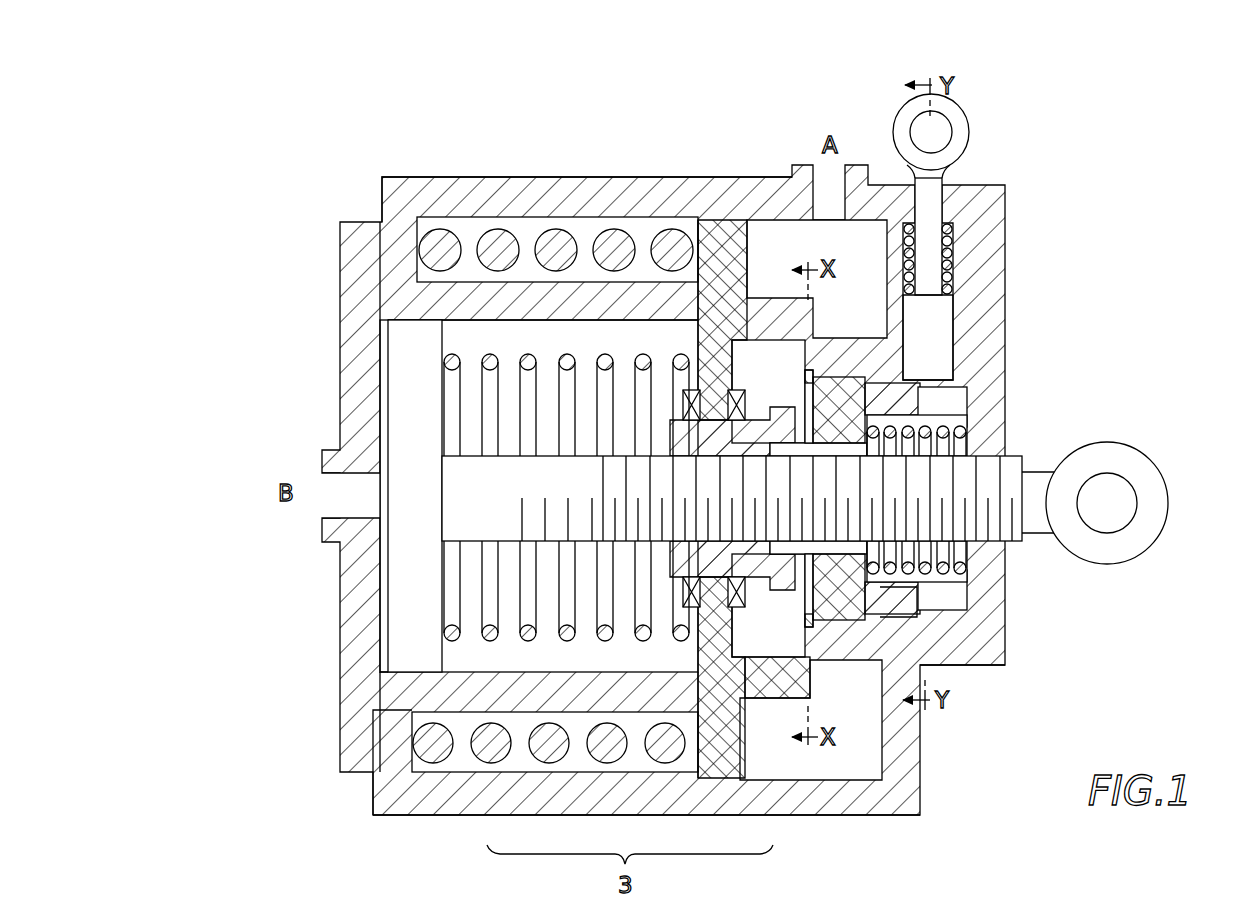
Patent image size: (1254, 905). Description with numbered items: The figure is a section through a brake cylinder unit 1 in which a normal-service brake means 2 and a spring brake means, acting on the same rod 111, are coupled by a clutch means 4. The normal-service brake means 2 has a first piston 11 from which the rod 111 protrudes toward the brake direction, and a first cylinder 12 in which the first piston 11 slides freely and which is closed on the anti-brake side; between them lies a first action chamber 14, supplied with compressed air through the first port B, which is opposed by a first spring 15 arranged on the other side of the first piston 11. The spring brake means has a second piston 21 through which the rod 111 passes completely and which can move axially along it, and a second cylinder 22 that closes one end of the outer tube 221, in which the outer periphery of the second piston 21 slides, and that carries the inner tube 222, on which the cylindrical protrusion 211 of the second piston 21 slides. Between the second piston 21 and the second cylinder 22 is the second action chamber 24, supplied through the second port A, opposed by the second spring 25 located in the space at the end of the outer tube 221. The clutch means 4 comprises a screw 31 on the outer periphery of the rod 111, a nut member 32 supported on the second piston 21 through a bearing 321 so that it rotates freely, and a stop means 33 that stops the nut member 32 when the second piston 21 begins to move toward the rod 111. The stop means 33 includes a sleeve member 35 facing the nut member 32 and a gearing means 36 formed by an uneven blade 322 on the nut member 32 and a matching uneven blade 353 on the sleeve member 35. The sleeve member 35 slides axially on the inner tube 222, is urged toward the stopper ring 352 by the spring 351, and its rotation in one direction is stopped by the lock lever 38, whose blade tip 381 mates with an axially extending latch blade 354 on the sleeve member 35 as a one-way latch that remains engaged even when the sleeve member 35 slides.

The brake cylinder unit 1 is at (282, 230).
The normal-service brake means 2 is at (531, 147).
The clutch means 4 is at (735, 152).
The first piston 11 is at (407, 332).
The first cylinder 12 is at (437, 297).
The first action chamber 14 is at (340, 330).
The first spring 15 is at (528, 356).
The second piston 21 is at (718, 760).
The second cylinder 22 is at (580, 790).
The second action chamber 24 is at (777, 760).
The second spring 25 is at (543, 755).
The screw 31 is at (600, 458).
The nut member 32 is at (618, 425).
The stop means 33 is at (775, 380).
The sleeve member 35 is at (920, 605).
The gearing means 36 is at (1066, 382).
The lock lever 38 is at (972, 124).
The rod 111 is at (470, 327).
The cylindrical protrusion 211 is at (810, 680).
The outer tube 221 is at (880, 800).
The inner tube 222 is at (935, 652).
The bearing 321 is at (660, 582).
The uneven blade 322 is at (870, 410).
The spring 351 is at (940, 592).
The stopper ring 352 is at (800, 608).
The uneven blade 353 is at (900, 383).
The latch blade 354 is at (880, 375).
The blade tip 381 is at (980, 358).